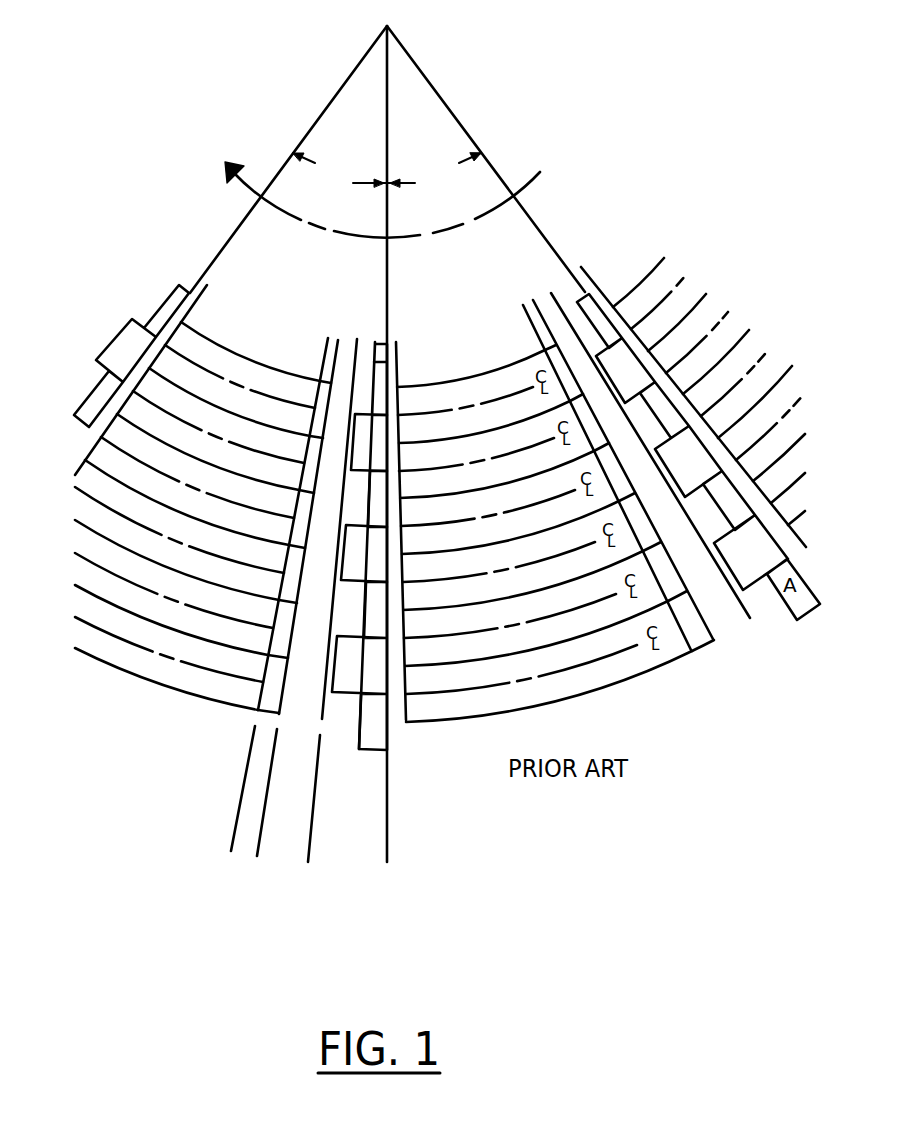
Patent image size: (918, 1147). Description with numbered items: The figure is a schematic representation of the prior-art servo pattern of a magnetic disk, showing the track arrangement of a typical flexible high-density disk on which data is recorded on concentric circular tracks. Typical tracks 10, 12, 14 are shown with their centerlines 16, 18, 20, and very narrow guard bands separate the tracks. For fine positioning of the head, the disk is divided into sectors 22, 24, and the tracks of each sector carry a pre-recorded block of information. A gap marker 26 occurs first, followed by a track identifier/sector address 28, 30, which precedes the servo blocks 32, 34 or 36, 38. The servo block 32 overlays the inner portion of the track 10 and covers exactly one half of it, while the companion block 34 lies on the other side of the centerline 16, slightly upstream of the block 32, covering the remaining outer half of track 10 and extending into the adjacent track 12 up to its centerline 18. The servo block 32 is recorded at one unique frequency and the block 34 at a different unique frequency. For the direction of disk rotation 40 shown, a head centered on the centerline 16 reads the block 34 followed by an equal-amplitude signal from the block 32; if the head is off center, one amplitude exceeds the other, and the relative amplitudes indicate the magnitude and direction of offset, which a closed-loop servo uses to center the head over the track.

The track 10 is at (433, 390).
The track 12 is at (462, 452).
The track 14 is at (478, 530).
The centerline 16 is at (514, 392).
The centerline 18 is at (550, 440).
The centerline 20 is at (560, 498).
The sector 22 is at (424, 98).
The sector 24 is at (346, 104).
The gap marker 26 is at (333, 340).
The track identifier/sector address 28 is at (340, 398).
The track identifier/sector address 30 is at (335, 450).
The servo block 32 is at (378, 342).
The servo block 34 is at (362, 447).
The servo block 36 is at (373, 498).
The servo block 38 is at (353, 553).
The direction of disk rotation 40 is at (250, 188).